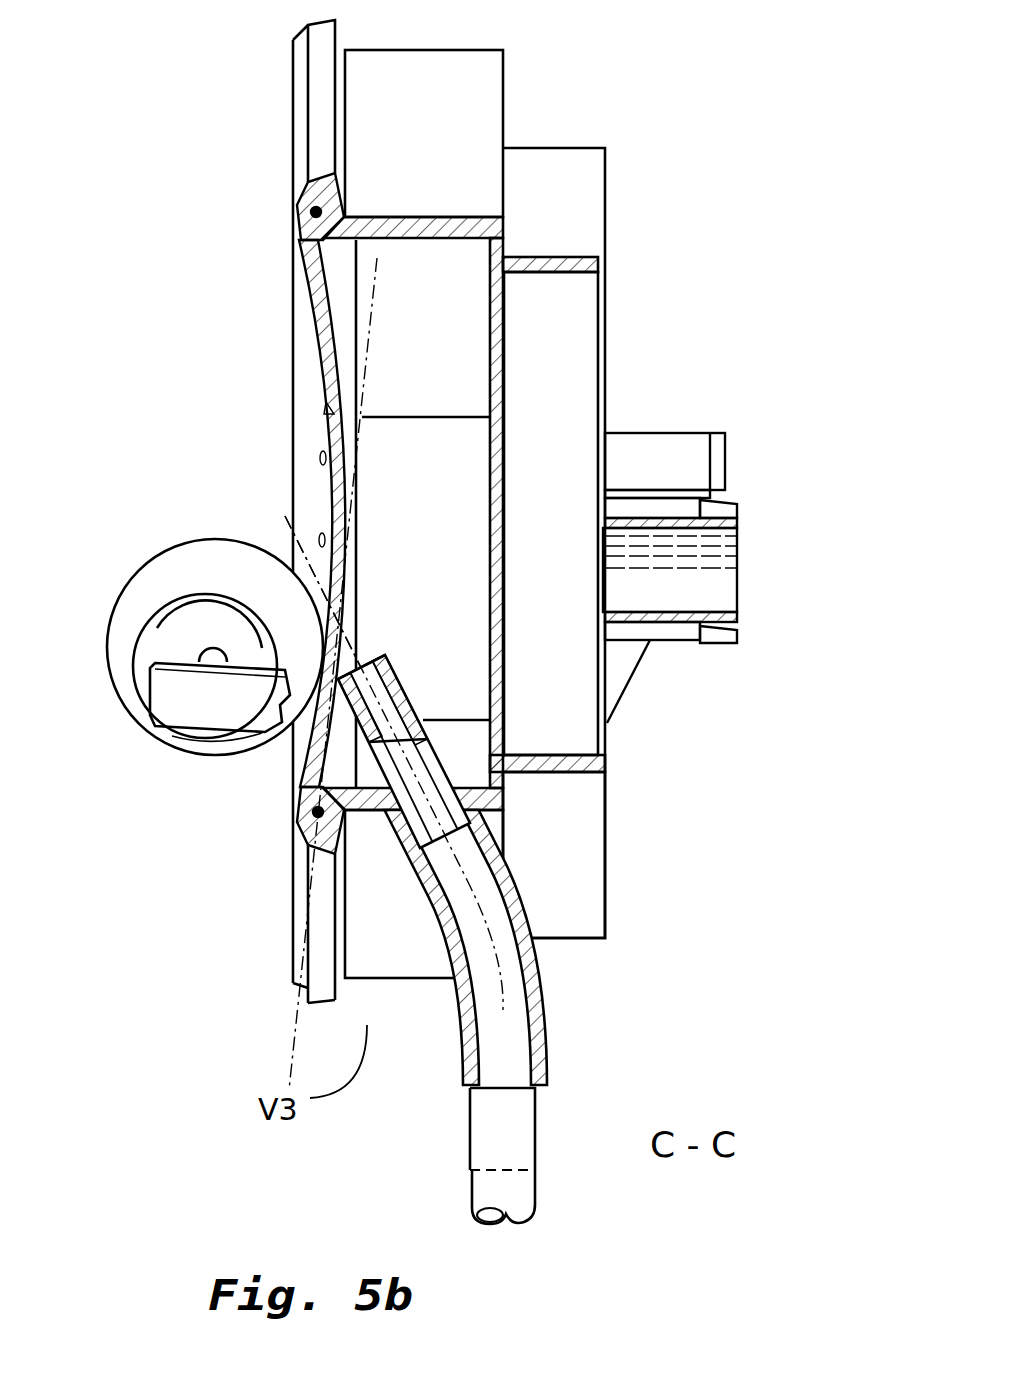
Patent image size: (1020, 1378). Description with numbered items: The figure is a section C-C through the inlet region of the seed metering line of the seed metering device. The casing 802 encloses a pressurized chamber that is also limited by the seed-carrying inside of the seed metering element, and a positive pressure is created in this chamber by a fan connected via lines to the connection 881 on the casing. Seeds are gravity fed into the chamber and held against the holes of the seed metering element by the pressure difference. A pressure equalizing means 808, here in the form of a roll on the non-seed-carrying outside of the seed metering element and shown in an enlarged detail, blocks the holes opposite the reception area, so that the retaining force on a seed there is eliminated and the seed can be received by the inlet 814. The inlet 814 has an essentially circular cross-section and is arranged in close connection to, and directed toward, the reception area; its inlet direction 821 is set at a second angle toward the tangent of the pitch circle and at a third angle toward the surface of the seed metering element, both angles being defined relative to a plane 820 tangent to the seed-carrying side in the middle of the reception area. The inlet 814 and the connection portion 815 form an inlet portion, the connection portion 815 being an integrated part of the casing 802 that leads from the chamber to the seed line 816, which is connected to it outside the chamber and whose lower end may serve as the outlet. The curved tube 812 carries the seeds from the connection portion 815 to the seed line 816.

The casing 802 is at (503, 98).
The pressure equalizing means 808 is at (160, 557).
The plane 820 is at (375, 288).
The inlet direction 821 is at (385, 665).
The inlet 814 is at (422, 697).
The connection 881 is at (680, 640).
The connection portion 815 is at (540, 990).
The tube 812 is at (496, 800).
The seed line 816 is at (472, 1195).